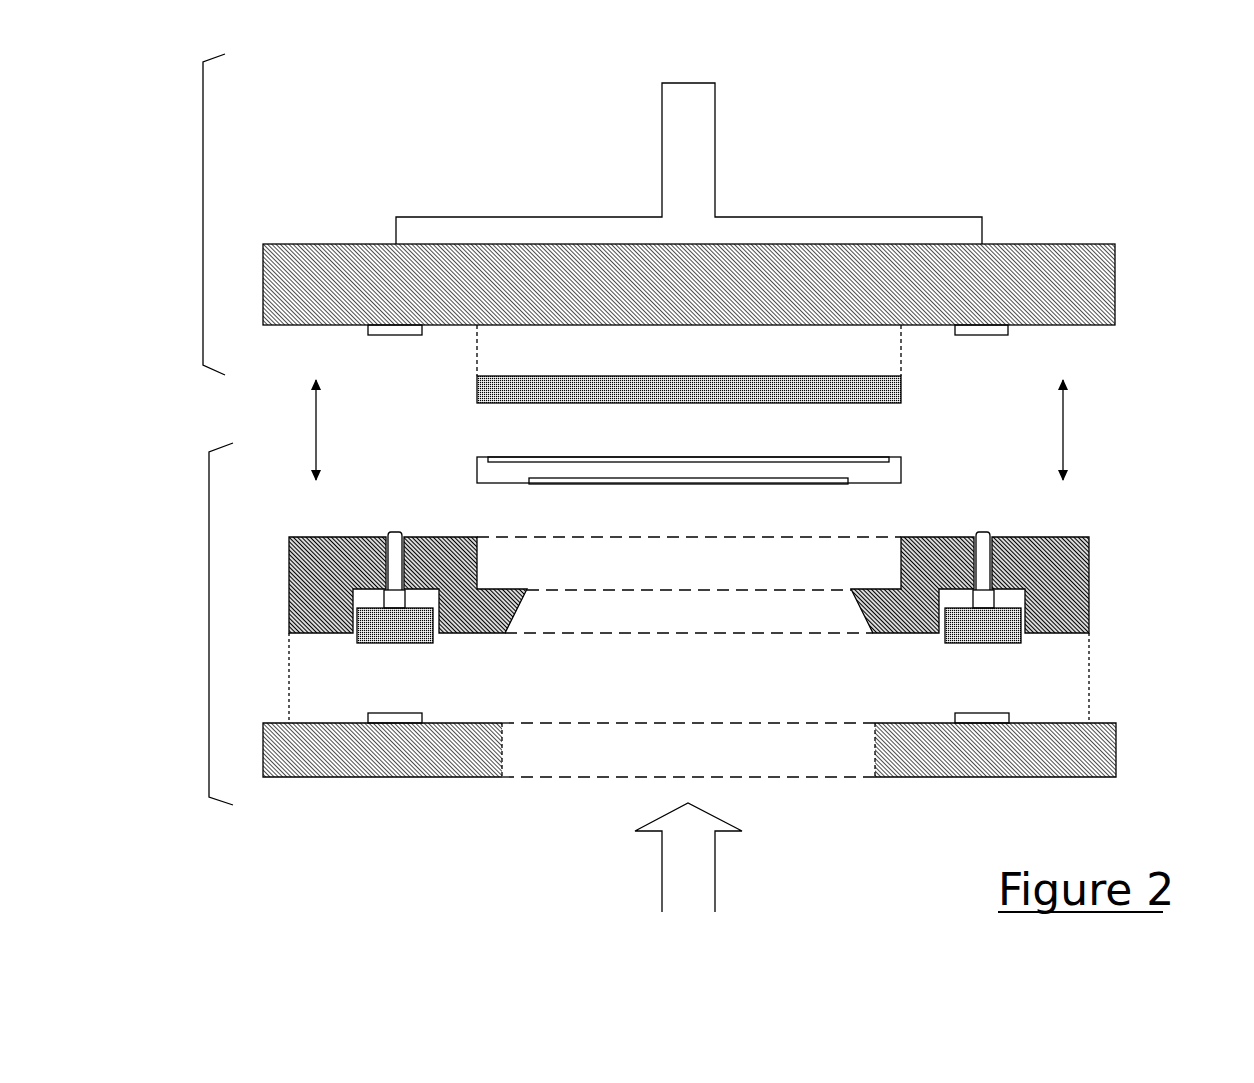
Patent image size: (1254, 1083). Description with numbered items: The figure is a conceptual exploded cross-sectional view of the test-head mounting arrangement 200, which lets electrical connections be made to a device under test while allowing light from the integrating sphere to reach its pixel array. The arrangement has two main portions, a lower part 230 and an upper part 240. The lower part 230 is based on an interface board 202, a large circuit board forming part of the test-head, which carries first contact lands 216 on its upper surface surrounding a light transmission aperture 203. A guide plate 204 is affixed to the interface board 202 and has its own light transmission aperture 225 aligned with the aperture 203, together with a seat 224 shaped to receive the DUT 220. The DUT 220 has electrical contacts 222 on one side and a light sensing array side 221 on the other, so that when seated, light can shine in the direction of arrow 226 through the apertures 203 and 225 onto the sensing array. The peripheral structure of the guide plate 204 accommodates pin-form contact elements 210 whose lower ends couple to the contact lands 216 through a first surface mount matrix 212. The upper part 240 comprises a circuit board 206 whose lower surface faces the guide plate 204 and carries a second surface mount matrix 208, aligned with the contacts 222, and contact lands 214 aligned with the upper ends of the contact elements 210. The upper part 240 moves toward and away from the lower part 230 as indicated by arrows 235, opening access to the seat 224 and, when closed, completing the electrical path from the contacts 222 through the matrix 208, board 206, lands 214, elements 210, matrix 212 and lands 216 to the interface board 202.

The test-head mounting arrangement 200 is at (262, 858).
The interface board 202 is at (1100, 750).
The light transmission aperture 203 is at (800, 777).
The guide plate 204 is at (1073, 562).
The circuit board 206 is at (1115, 287).
The second surface mount matrix 208 is at (477, 388).
The contact elements 210 is at (395, 547).
The first surface mount matrix 212 is at (383, 632).
The contact lands 214 is at (372, 335).
The first contact lands 216 is at (408, 712).
The DUT 220 is at (884, 472).
The light sensing array side 221 is at (556, 488).
The electrical contacts 222 is at (880, 455).
The seat 224 is at (515, 586).
The light transmission aperture 225 is at (685, 633).
The arrow 226 is at (688, 857).
The lower part 230 is at (195, 624).
The arrows 235 is at (1063, 430).
The upper part 240 is at (191, 214).